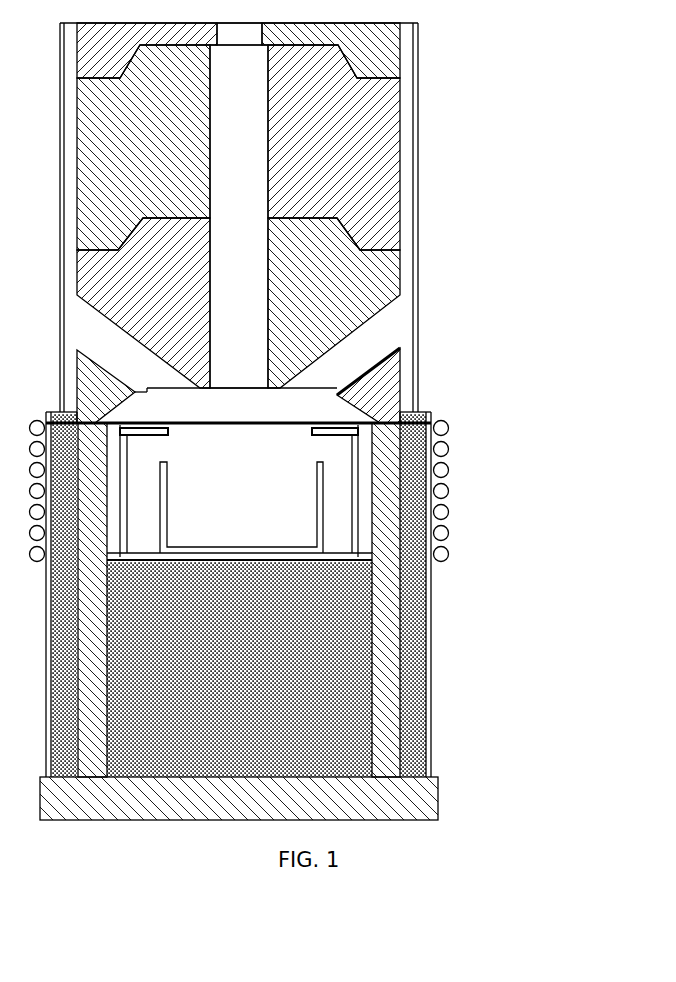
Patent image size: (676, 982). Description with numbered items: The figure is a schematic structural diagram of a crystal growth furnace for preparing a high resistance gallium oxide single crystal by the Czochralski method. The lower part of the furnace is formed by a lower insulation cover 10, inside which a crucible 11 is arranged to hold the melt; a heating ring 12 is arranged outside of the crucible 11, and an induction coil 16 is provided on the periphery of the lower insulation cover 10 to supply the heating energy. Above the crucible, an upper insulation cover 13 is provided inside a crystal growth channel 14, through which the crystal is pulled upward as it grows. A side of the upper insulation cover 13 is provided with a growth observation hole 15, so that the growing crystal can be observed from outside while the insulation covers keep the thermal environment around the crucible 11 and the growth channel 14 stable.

The lower insulation cover 10 is at (302, 616).
The crucible 11 is at (352, 531).
The heating ring 12 is at (321, 492).
The upper insulation cover 13 is at (310, 223).
The crystal growth channel 14 is at (377, 205).
The growth observation hole 15 is at (441, 367).
The induction coil 16 is at (283, 491).